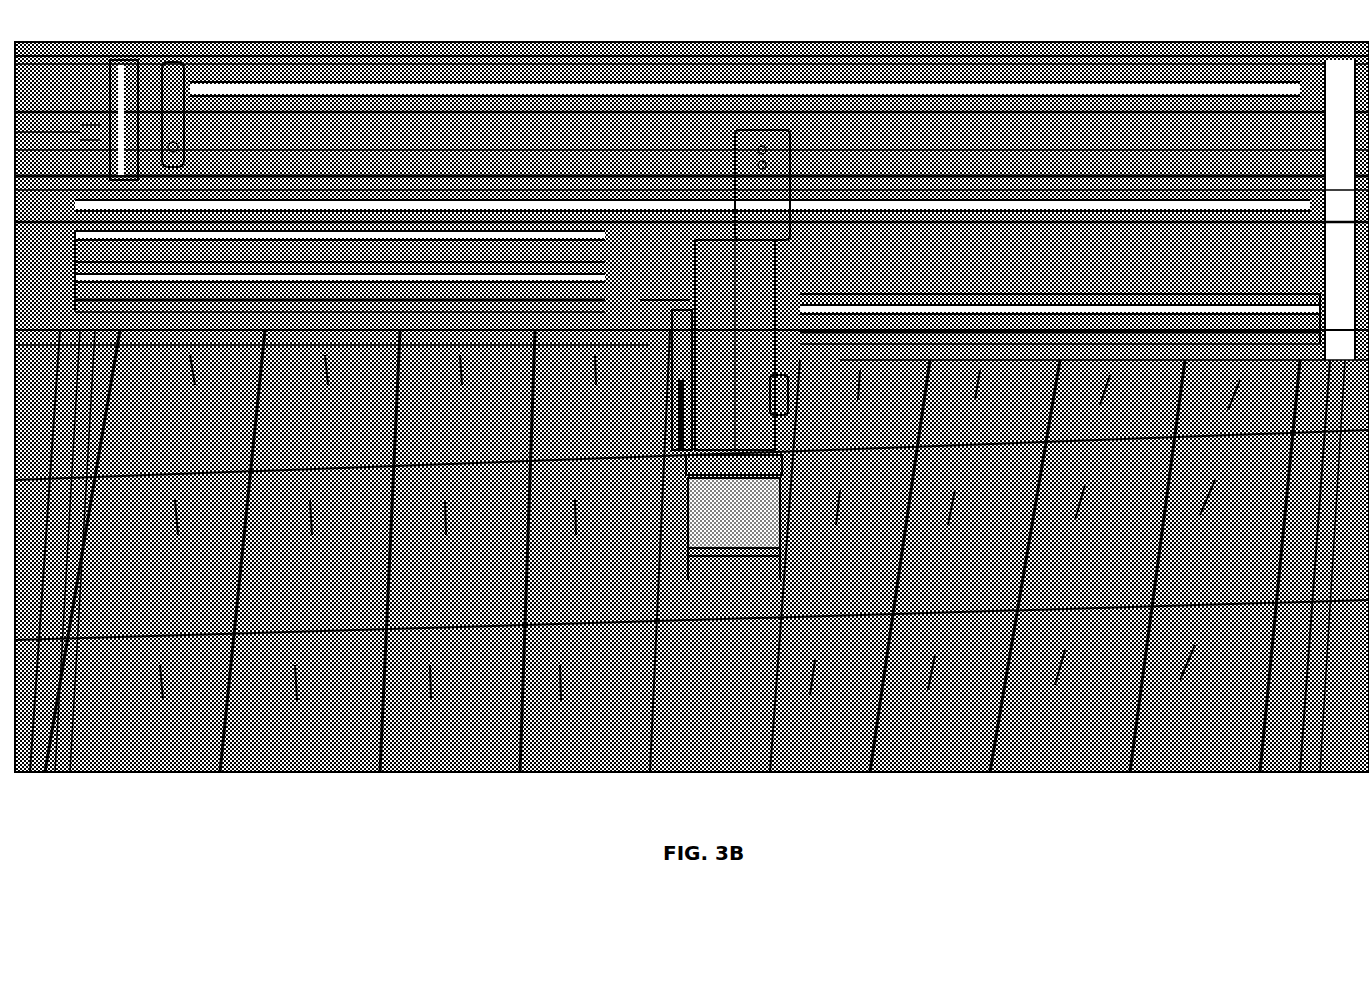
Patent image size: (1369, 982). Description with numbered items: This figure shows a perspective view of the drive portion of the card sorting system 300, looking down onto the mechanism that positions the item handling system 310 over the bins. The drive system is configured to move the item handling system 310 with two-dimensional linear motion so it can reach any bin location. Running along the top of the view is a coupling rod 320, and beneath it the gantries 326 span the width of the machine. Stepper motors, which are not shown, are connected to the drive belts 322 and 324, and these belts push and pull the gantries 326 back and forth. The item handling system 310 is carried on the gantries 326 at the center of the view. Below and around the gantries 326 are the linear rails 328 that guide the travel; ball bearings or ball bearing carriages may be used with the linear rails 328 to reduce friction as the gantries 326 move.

The sorting system 300 is at (1014, 832).
The item handling system 310 is at (720, 210).
The coupling rod 320 is at (372, 82).
The drive belt 322 is at (94, 76).
The drive belt 324 is at (176, 250).
The gantries 326 is at (344, 182).
The linear rails 328 is at (36, 434).